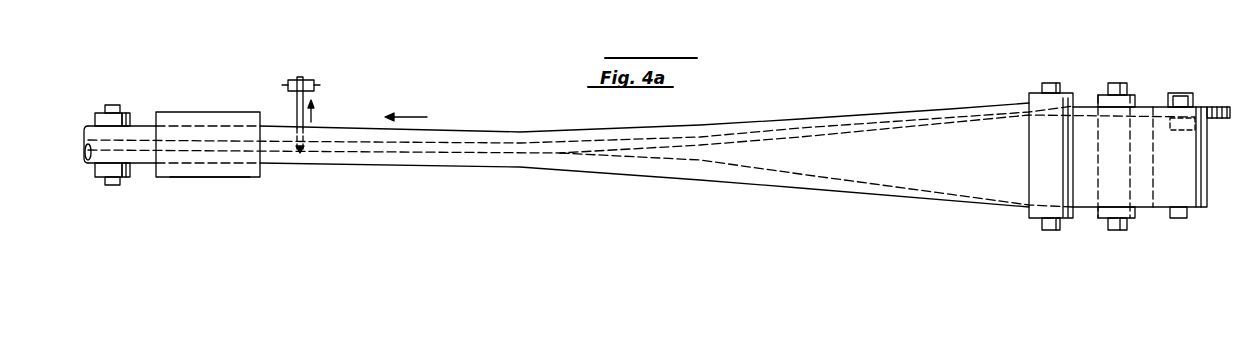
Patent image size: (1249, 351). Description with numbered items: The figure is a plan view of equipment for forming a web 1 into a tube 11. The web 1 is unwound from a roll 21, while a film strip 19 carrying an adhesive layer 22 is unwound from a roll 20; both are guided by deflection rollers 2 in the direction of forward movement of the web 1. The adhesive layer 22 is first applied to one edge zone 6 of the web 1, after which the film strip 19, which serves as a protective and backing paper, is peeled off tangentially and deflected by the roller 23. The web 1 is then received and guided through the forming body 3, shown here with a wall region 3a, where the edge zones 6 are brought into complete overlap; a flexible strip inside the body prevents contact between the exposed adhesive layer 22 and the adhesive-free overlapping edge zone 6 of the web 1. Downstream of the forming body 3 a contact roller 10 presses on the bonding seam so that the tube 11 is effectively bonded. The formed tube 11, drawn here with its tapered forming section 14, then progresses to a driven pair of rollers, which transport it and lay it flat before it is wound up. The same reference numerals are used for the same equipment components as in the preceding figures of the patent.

The web 1 is at (1148, 163).
The deflection rollers 2 is at (1102, 220).
The forming body 3 is at (198, 108).
The sleeve wall 3a is at (227, 170).
The edge zones 6 is at (879, 130).
The contact roller 10 is at (100, 173).
The tube 11 is at (101, 130).
The tube 14 is at (330, 130).
The film strip 19 is at (297, 105).
The roll 20 is at (1218, 107).
The roll 21 is at (1202, 162).
The adhesive layer 22 is at (277, 150).
The roller 23 is at (313, 83).